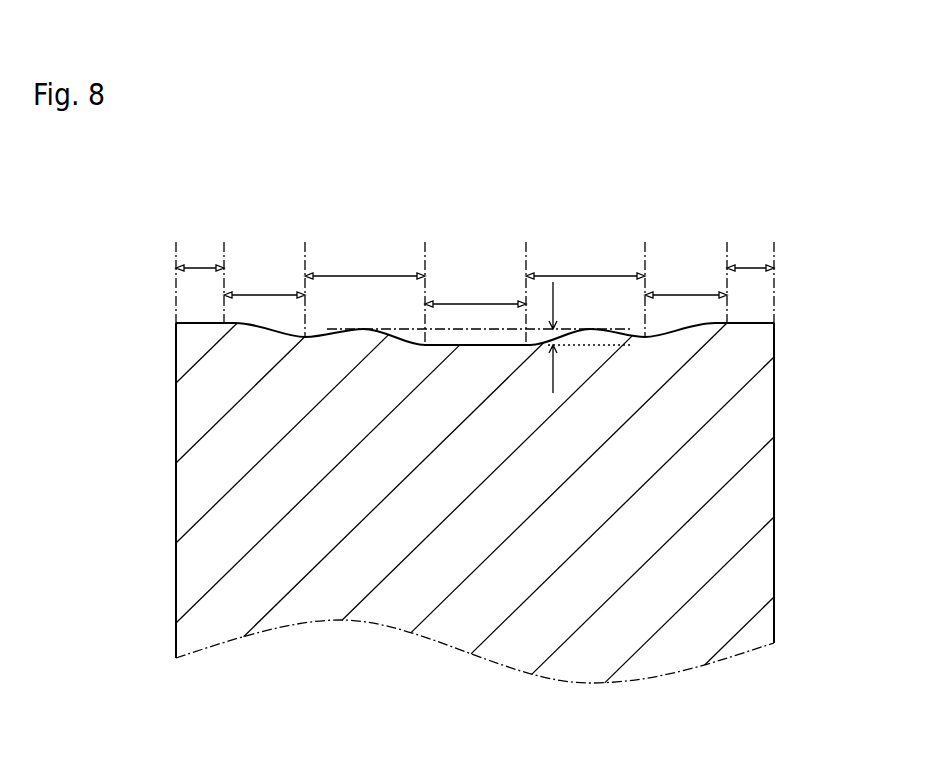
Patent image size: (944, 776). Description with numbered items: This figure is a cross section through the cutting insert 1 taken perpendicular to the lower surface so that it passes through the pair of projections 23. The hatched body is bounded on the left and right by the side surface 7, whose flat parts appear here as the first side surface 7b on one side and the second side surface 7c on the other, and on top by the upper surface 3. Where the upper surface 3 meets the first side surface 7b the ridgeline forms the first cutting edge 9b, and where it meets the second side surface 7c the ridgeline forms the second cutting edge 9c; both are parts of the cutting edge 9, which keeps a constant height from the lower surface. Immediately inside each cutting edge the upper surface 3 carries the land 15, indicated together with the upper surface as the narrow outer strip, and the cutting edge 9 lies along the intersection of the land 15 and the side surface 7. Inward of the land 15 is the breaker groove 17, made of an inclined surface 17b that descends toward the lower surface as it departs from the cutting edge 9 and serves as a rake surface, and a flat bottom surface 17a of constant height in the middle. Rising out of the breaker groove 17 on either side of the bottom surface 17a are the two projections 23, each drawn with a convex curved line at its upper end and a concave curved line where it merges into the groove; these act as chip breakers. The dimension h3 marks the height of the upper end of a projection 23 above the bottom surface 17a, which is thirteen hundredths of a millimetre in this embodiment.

The cutting insert 1 is at (338, 178).
The upper surface 3 is at (478, 243).
The land 15 is at (201, 265).
The side surface 7 is at (478, 490).
The first side surface 7b is at (176, 462).
The second side surface 7c is at (774, 455).
The cutting edge 9 is at (478, 288).
The first cutting edge 9b is at (176, 322).
The second cutting edge 9c is at (774, 322).
The breaker groove 17 is at (475, 291).
The bottom surface 17a is at (477, 293).
The inclined surface 17b is at (475, 287).
The projection 23 is at (475, 293).
The height of the upper end of the projection h3 is at (555, 360).